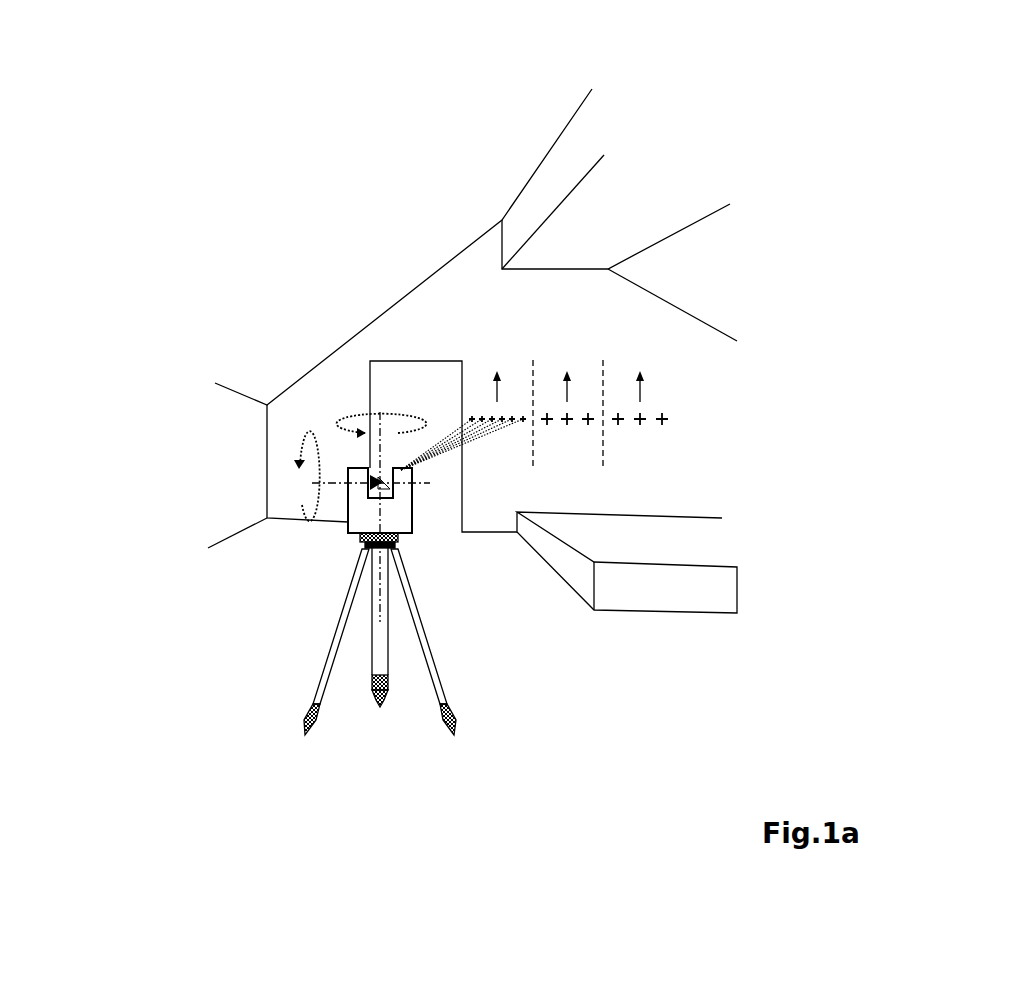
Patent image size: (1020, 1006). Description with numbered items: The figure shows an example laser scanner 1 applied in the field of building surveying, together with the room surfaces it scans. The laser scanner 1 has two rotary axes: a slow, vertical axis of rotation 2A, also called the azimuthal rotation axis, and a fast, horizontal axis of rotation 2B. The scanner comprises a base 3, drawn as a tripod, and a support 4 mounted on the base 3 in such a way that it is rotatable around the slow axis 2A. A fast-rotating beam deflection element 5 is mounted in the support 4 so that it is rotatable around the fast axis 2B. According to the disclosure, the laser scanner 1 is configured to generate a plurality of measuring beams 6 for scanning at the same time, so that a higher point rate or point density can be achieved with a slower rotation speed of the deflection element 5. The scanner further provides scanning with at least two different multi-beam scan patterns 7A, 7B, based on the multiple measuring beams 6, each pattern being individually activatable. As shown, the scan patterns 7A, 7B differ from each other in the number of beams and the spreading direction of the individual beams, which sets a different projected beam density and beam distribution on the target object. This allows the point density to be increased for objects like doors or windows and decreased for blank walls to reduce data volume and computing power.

The laser scanner 1 is at (172, 250).
The slow (vertical) axis of rotation 2A is at (380, 410).
The fast (horizontal) axis of rotation 2B is at (310, 482).
The base 3 is at (358, 542).
The support 4 is at (402, 508).
The beam deflection element 5 is at (373, 482).
The measuring beams 6 is at (455, 438).
The first multi-beam scan pattern 7A is at (490, 342).
The second multi-beam scan pattern 7B is at (584, 339).